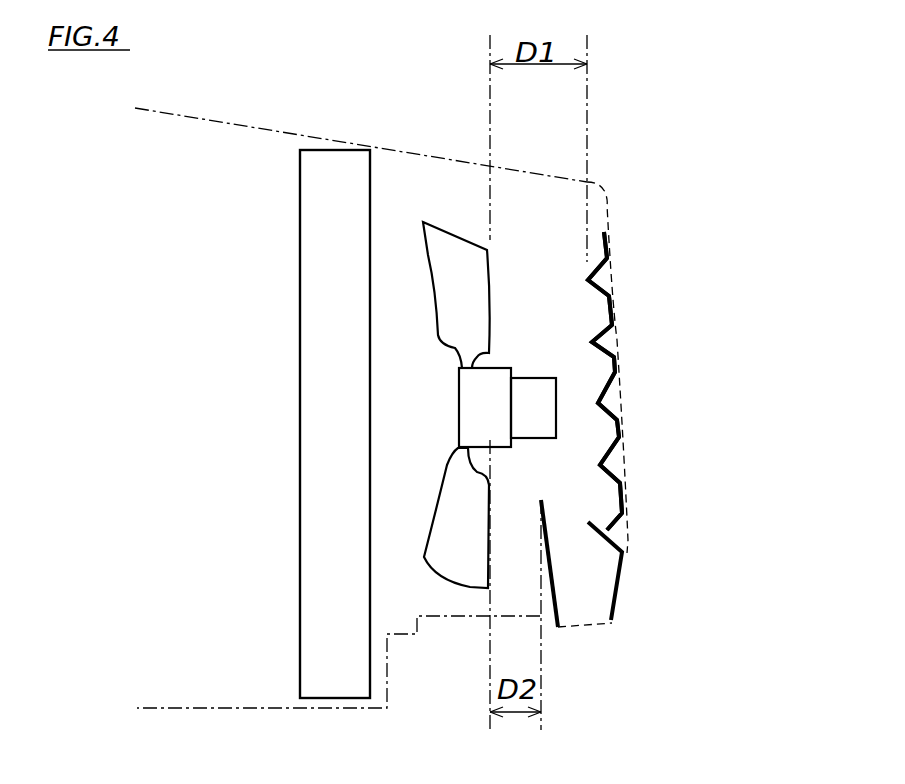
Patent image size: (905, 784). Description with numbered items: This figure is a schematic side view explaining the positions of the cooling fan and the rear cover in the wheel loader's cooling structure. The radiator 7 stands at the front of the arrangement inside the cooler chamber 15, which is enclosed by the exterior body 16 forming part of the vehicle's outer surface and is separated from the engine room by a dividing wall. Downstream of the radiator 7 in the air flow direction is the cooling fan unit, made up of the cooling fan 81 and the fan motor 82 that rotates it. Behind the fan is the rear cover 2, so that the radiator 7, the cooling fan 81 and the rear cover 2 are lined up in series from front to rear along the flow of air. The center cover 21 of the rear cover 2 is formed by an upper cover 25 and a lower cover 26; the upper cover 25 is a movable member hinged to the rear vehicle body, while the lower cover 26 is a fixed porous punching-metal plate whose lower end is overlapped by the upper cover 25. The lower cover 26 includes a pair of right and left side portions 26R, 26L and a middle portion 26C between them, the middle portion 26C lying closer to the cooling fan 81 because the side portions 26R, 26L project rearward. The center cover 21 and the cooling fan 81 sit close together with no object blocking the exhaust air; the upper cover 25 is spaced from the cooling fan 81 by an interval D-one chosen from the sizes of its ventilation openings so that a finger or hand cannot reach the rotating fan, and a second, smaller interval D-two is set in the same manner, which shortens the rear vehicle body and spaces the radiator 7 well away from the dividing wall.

The rear cover 2 is at (644, 208).
The radiator 7 is at (338, 150).
The cooler chamber 15 is at (263, 398).
The exterior body 16 is at (218, 120).
The center cover 21 is at (688, 418).
The upper cover 25 is at (600, 340).
The lower cover 26 is at (660, 598).
The left side portion 26L is at (684, 583).
The right side portion 26R is at (622, 600).
The middle portion 26C is at (557, 607).
The cooling fan 81 is at (455, 236).
The fan motor 82 is at (556, 400).